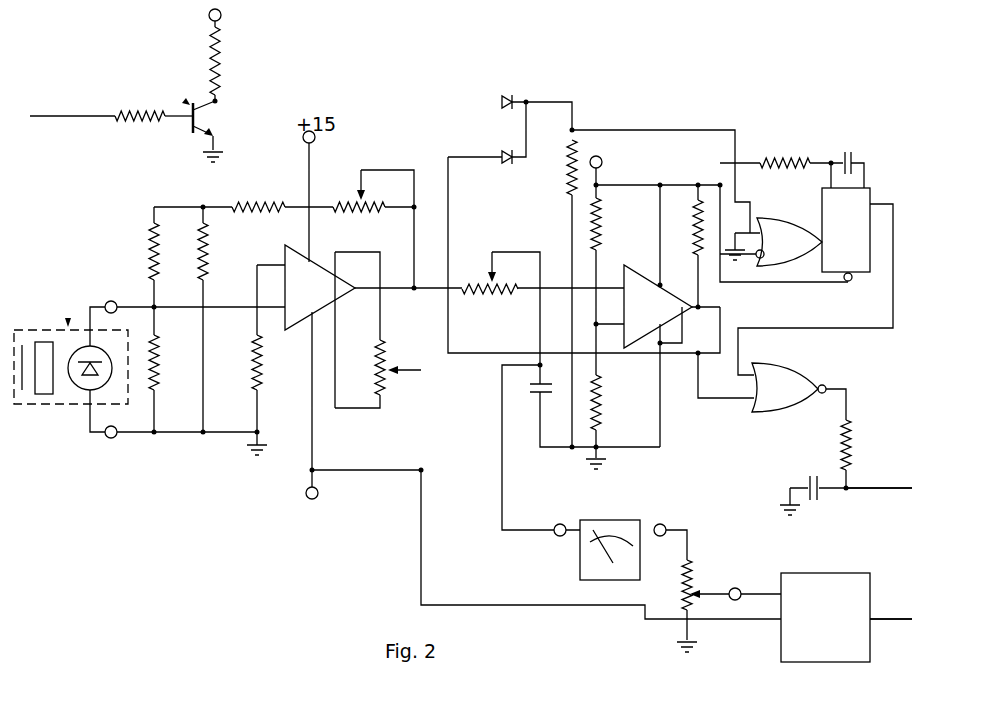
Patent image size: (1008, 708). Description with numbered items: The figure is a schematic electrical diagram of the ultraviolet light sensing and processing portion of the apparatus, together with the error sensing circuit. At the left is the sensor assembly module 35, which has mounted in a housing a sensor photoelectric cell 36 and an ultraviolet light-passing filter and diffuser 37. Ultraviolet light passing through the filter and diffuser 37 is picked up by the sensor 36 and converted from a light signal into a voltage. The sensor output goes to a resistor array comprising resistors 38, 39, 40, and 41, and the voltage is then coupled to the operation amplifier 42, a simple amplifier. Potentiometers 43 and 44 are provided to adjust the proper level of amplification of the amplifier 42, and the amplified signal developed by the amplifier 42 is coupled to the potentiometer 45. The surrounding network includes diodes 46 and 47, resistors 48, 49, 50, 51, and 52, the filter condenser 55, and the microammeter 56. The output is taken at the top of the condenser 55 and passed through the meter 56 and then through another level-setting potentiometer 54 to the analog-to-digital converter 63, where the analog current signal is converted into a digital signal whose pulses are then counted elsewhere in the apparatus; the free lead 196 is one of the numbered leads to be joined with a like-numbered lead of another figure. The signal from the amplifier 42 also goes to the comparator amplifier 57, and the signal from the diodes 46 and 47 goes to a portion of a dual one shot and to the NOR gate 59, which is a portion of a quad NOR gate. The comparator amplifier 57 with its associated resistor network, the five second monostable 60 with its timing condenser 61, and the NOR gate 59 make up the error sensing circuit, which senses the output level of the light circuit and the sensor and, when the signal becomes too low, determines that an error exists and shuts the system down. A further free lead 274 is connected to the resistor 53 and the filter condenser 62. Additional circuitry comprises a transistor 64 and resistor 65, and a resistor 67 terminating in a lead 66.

The sensor assembly module 35 is at (68, 320).
The sensor photoelectric cell 36 is at (82, 388).
The ultraviolet light-passing filter and diffuser 37 is at (43, 341).
The resistor 38 is at (160, 367).
The resistor 39 is at (263, 367).
The resistor 40 is at (150, 251).
The resistor 41 is at (209, 256).
The operation amplifier 42 is at (262, 197).
The potentiometer 43 is at (356, 202).
The potentiometer 44 is at (388, 363).
The potentiometer 45 is at (485, 282).
The diode 46 is at (506, 95).
The diode 47 is at (507, 165).
The resistor 48 is at (567, 170).
The resistor 49 is at (602, 227).
The resistor 50 is at (610, 400).
The resistor 51 is at (694, 236).
The resistor 52 is at (781, 158).
The resistor 53 is at (856, 441).
The potentiometer 54 is at (694, 573).
The filter condenser 55 is at (540, 395).
The microammeter 56 is at (582, 560).
The comparator amplifier 57 is at (646, 269).
The NOR gate 59 is at (790, 364).
The five second monostable 60 is at (872, 203).
The timing condenser 61 is at (850, 153).
The filter condenser 62 is at (807, 483).
The analog-to-digital converter 63 is at (825, 602).
The transistor 64 is at (186, 103).
The resistor 65 is at (222, 56).
The lead 66 is at (37, 118).
The resistor 67 is at (136, 108).
The output line 196 is at (905, 606).
The free lead 274 is at (896, 496).